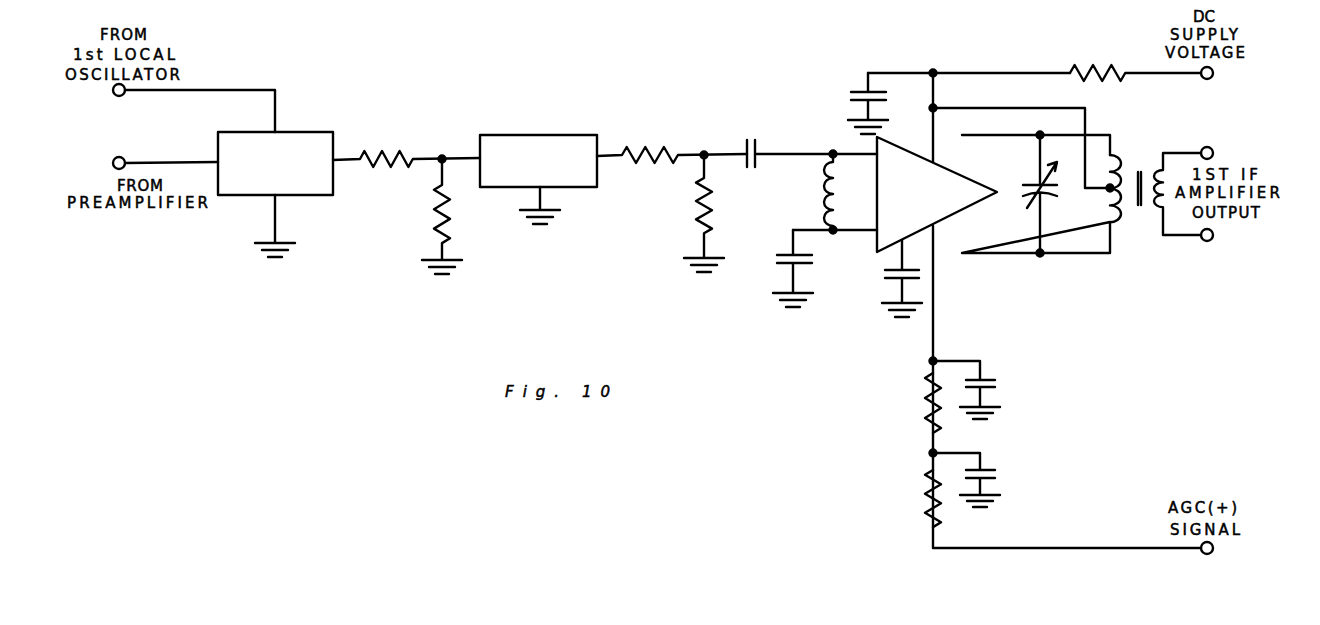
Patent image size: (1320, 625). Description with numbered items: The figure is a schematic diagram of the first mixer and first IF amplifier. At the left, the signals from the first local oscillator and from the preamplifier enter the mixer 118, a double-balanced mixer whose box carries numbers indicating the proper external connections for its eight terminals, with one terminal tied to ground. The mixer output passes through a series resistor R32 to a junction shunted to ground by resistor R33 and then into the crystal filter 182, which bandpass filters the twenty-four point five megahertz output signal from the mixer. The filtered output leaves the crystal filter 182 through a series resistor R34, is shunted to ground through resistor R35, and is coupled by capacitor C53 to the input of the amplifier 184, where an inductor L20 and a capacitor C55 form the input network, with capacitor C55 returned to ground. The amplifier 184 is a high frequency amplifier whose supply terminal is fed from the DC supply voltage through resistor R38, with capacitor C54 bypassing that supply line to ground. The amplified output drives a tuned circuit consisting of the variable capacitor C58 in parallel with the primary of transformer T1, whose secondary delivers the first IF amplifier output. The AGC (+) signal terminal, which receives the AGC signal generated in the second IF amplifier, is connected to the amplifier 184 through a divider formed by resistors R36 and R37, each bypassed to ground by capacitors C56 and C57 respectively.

The mixer 118 is at (300, 132).
The crystal filter 182 is at (510, 135).
The amplifier 184 is at (914, 137).
The resistor R32 is at (406, 150).
The resistor R33 is at (430, 216).
The resistor R34 is at (672, 143).
The resistor R35 is at (693, 213).
The resistor R36 is at (913, 403).
The resistor R37 is at (915, 498).
The resistor R38 is at (1135, 62).
The capacitor C53 is at (806, 142).
The capacitor C54 is at (851, 103).
The capacitor C55 is at (810, 268).
The capacitor C56 is at (984, 390).
The capacitor C57 is at (984, 480).
The variable capacitor C58 is at (1036, 194).
The inductor L20 is at (805, 192).
The transformer T1 is at (1155, 184).